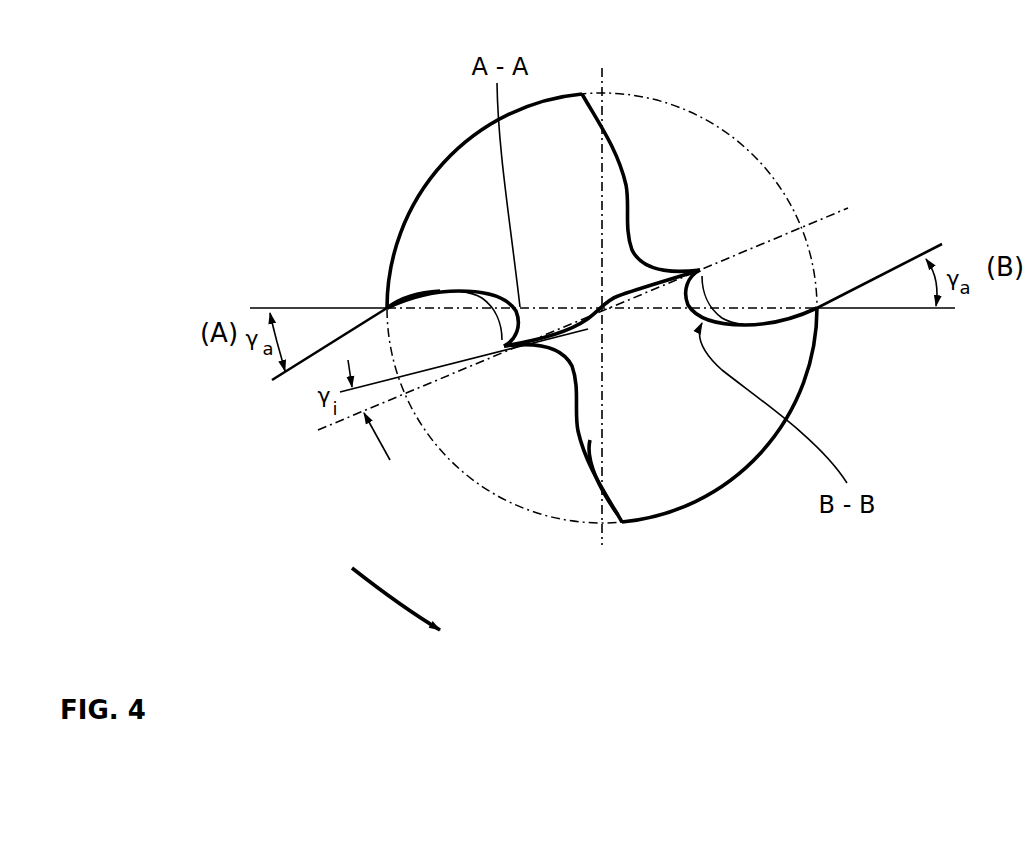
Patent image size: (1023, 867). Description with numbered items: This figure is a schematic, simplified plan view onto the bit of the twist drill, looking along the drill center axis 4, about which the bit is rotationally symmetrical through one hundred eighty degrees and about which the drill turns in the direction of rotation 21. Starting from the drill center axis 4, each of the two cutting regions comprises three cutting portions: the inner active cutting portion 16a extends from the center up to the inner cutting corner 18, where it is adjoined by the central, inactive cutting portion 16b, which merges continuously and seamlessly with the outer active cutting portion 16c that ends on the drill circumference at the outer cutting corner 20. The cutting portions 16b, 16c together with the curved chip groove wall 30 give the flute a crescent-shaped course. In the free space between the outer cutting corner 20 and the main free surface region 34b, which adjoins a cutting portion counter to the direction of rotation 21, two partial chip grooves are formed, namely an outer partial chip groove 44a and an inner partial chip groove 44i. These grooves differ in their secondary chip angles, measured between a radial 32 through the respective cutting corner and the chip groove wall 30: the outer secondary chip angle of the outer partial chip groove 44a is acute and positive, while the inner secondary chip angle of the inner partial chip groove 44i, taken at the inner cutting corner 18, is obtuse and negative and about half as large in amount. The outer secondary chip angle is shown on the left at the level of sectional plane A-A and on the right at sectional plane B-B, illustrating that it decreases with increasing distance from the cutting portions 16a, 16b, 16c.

The drill center axis 4 is at (602, 306).
The inner active cutting portion 16a is at (578, 326).
The inactive cutting portion 16b is at (468, 295).
The outer active cutting portion 16c is at (414, 300).
The inner cutting corner 18 is at (700, 270).
The outer cutting corner 20 is at (385, 307).
The direction of rotation 21 is at (383, 597).
The chip groove wall 30 is at (415, 294).
The radial 32 is at (313, 423).
The main free surface region 34b is at (613, 423).
The outer partial chip groove 44a is at (760, 300).
The inner partial chip groove 44i is at (665, 247).